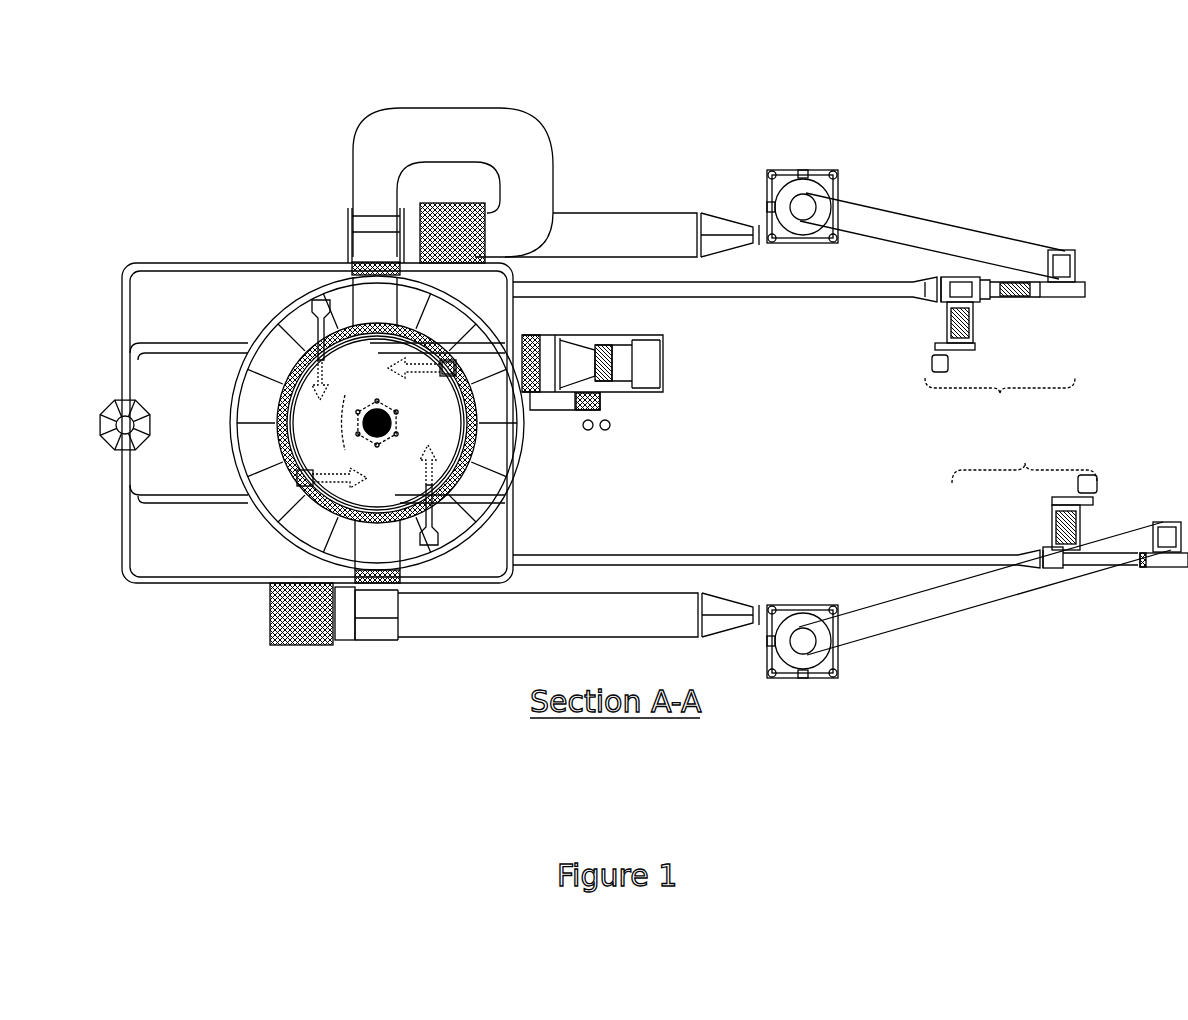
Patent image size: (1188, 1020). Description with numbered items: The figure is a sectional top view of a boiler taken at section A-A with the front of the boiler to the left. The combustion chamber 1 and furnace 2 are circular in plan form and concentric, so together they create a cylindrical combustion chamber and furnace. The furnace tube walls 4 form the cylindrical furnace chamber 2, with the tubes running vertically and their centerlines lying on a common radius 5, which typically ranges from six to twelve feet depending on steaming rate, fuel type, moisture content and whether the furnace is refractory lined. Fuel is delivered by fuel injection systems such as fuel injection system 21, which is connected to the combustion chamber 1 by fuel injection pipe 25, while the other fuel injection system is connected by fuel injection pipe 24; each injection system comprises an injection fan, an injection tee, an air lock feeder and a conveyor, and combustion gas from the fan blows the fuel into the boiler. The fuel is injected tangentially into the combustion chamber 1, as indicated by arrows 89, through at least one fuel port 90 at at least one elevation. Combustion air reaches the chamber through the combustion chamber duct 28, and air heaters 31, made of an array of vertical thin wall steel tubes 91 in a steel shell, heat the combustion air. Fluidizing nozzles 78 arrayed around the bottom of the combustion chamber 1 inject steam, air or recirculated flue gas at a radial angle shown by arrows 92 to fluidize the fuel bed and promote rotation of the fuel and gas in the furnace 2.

The combustion chamber 1 is at (420, 540).
The furnace 2 is at (377, 527).
The furnace tube walls 4 is at (255, 470).
The radius 5 is at (390, 395).
The fuel injection system 21 is at (973, 299).
The fuel injection pipe 24 is at (635, 553).
The fuel injection pipe 25 is at (715, 298).
The combustion chamber duct 28 is at (977, 554).
The air heater 31 is at (488, 213).
The fluidizing nozzles 78 is at (335, 422).
The arrows 89 is at (308, 383).
The fuel port 90 is at (410, 275).
The thin wall steel tubes 91 is at (468, 203).
The arrows 92 is at (445, 490).